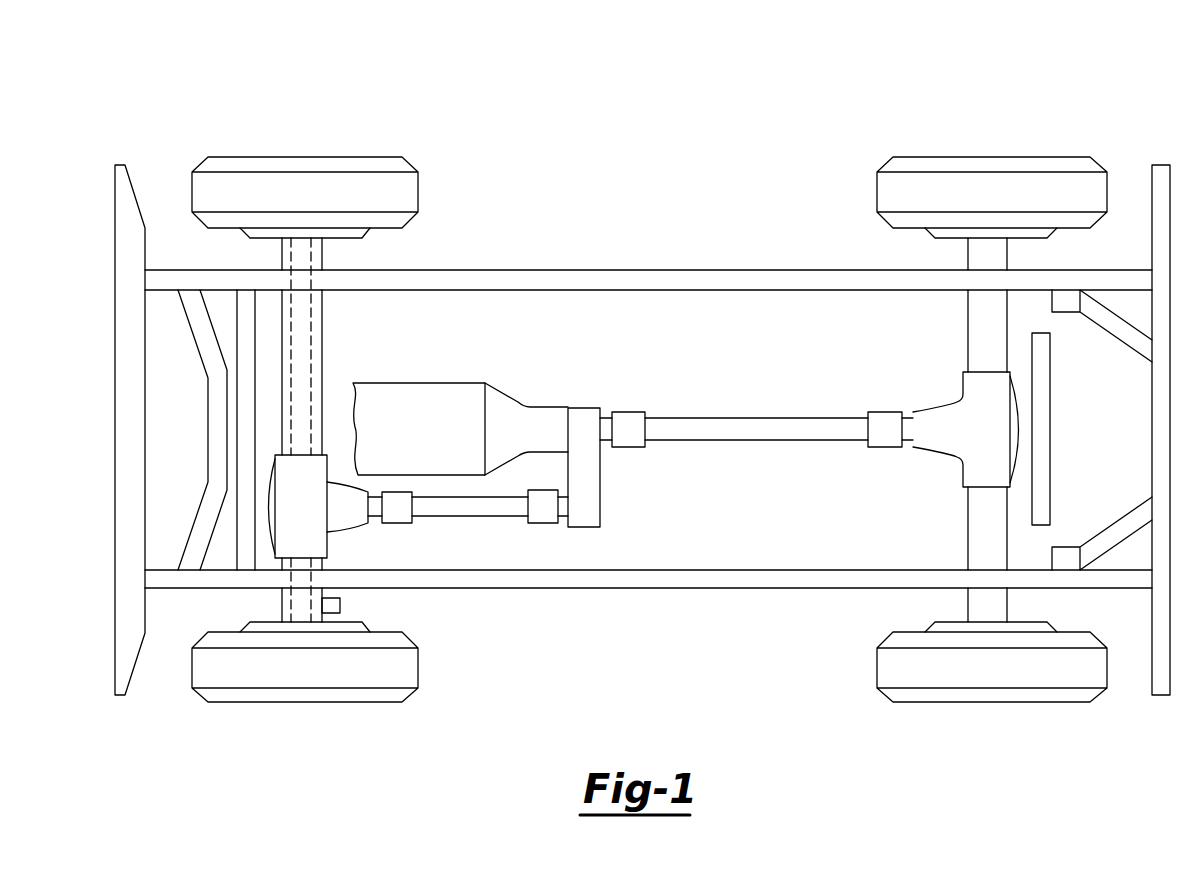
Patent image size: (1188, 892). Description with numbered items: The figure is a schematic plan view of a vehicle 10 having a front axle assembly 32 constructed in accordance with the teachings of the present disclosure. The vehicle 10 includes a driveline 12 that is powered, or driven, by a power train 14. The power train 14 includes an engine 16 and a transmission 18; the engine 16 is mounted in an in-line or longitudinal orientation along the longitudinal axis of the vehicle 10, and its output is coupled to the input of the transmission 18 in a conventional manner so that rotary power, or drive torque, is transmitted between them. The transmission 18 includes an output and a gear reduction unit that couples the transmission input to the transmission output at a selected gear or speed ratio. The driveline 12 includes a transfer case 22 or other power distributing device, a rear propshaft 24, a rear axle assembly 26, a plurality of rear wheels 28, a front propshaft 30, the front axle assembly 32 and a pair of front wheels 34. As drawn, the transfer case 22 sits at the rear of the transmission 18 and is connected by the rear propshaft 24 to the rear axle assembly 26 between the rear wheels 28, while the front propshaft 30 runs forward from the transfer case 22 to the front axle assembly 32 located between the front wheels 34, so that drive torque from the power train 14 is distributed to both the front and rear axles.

The vehicle 10 is at (879, 101).
The driveline 12 is at (711, 349).
The power train 14 is at (377, 382).
The engine 16 is at (463, 388).
The transmission 18 is at (508, 403).
The transfer case 22 is at (599, 488).
The rear propshaft 24 is at (803, 422).
The rear axle assembly 26 is at (1011, 368).
The rear wheels 28 is at (1042, 157).
The front propshaft 30 is at (470, 512).
The front axle assembly 32 is at (266, 520).
The front wheels 34 is at (347, 157).